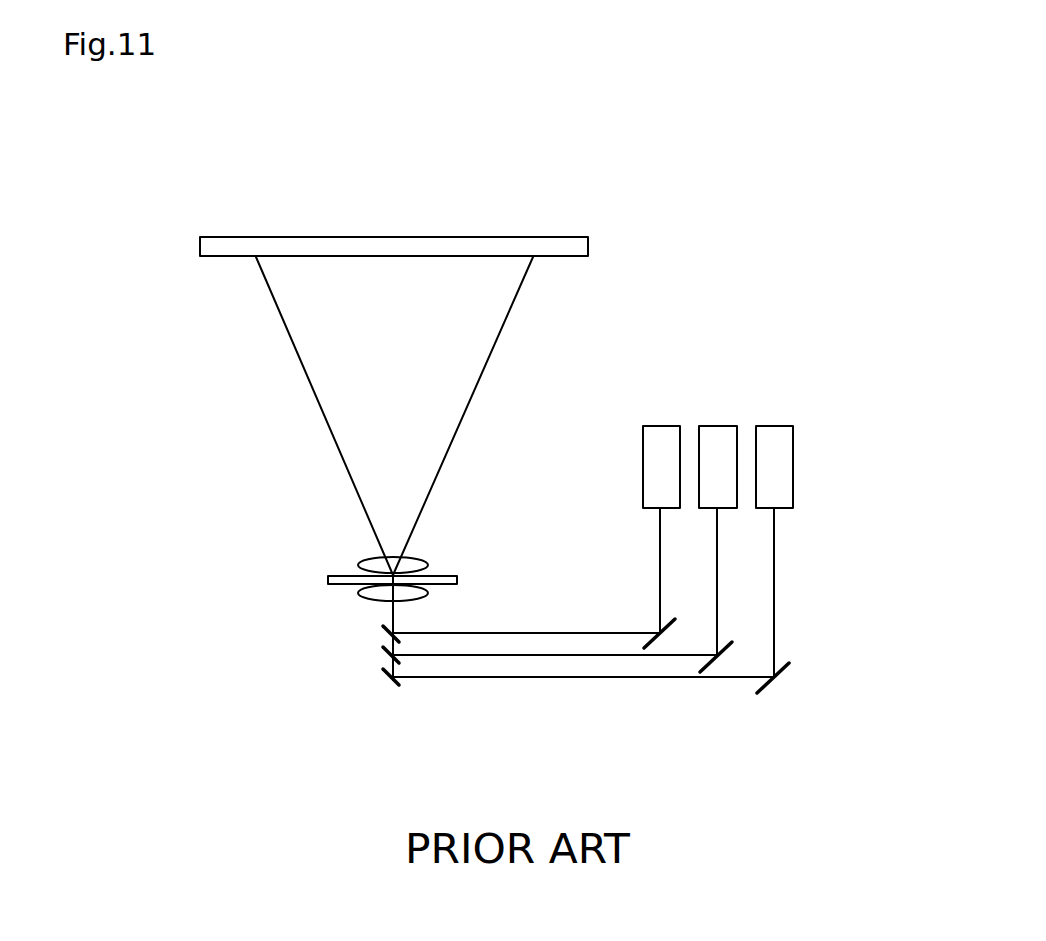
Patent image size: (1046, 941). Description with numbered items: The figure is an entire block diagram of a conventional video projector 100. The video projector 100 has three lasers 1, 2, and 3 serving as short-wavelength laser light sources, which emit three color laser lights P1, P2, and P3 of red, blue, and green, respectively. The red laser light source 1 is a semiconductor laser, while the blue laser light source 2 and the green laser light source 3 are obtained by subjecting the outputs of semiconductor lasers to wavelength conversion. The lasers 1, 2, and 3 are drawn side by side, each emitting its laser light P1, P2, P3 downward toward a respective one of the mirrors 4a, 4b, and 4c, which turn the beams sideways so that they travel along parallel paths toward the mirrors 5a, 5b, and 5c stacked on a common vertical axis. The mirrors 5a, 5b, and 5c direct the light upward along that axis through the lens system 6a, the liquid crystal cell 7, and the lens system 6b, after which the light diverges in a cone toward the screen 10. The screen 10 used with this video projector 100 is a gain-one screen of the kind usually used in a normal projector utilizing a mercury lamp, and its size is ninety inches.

The video projector 100 is at (232, 193).
The screen 10 is at (557, 236).
The red laser light source 1 is at (670, 423).
The blue laser light source 2 is at (727, 423).
The green laser light source 3 is at (783, 423).
The mirror 4a is at (663, 647).
The mirror 4b is at (718, 672).
The mirror 4c is at (775, 690).
The mirror 5a is at (382, 628).
The mirror 5b is at (383, 650).
The mirror 5c is at (387, 672).
The lens system 6a is at (355, 596).
The lens system 6b is at (370, 558).
The liquid crystal cell 7 is at (326, 579).
The red laser light P1 is at (660, 575).
The blue laser light P2 is at (717, 550).
The green laser light P3 is at (775, 528).